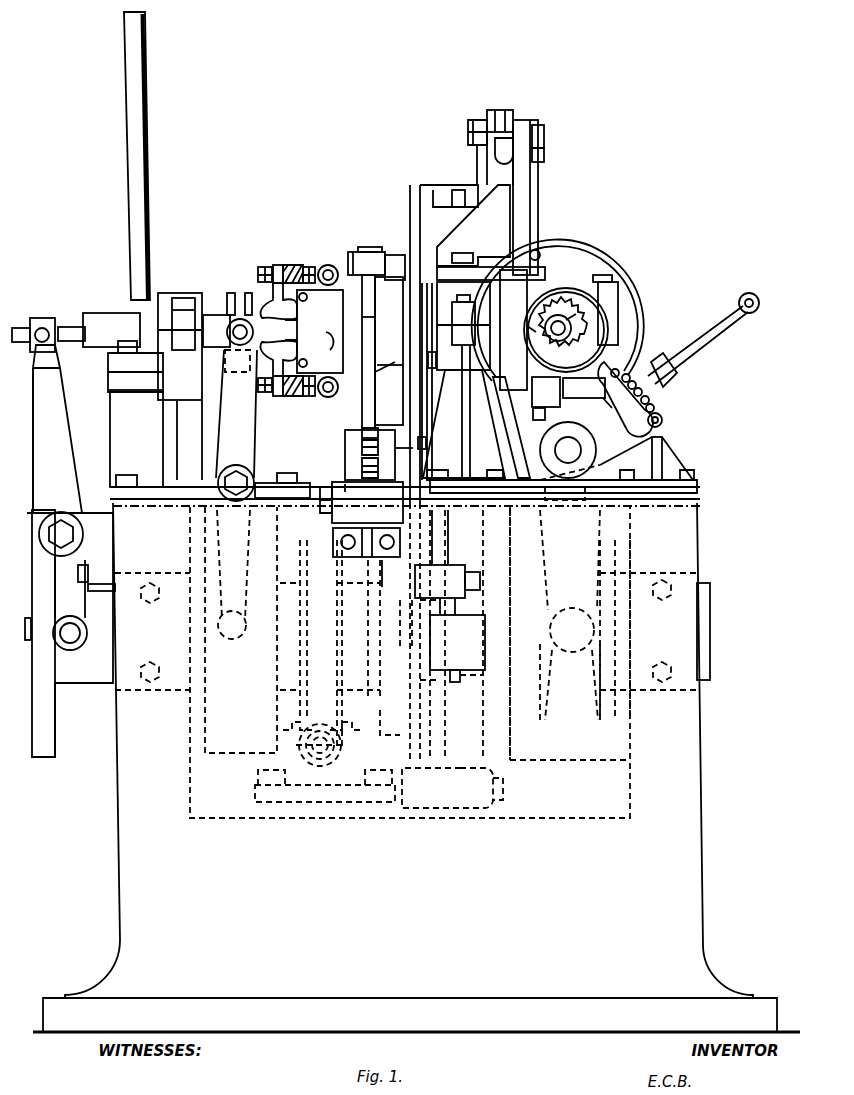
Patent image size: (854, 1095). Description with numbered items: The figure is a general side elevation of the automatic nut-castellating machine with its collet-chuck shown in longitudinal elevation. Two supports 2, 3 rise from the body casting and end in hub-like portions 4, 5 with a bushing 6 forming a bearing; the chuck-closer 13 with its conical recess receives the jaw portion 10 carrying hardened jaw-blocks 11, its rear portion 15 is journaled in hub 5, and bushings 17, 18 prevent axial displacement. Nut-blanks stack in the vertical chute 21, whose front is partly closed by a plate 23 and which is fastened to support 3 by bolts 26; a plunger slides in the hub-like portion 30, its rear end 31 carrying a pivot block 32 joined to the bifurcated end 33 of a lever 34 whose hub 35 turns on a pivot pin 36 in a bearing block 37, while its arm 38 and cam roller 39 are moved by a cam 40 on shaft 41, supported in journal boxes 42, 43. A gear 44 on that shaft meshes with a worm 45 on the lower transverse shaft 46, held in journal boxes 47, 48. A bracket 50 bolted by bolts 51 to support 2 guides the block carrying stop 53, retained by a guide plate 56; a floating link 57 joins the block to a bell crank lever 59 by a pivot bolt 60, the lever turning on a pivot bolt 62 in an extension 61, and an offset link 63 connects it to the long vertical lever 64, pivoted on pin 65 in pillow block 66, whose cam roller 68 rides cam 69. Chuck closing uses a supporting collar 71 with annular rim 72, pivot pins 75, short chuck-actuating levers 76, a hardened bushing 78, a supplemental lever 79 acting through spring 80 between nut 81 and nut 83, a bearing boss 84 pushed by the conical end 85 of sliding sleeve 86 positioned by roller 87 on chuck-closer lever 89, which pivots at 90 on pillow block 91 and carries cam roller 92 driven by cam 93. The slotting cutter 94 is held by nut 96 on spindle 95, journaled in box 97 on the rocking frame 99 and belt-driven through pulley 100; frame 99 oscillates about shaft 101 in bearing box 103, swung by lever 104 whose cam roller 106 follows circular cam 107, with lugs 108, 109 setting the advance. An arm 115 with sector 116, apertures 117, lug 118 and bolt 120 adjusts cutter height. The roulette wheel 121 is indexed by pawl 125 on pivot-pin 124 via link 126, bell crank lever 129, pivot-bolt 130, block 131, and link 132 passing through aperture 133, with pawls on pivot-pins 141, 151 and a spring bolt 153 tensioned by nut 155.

The support 2 is at (464, 424).
The support 3 is at (136, 438).
The hub-like portion 4 is at (463, 380).
The hub-like portion 5 is at (180, 377).
The bushing 6 is at (432, 381).
The jaw portion 10 is at (546, 393).
The jaw-blocks 11 is at (530, 329).
The chuck-closer 13 is at (513, 330).
The rear portion of chuck-closer 15 is at (216, 331).
The bushing 17 is at (509, 427).
The bushing 18 is at (436, 358).
The vertical chute 21 is at (127, 180).
The plate 23 is at (150, 205).
The bolts 26 is at (135, 359).
The hub-like portion 30 is at (112, 318).
The rear end of plunger 31 is at (70, 327).
The pivot block 32 is at (40, 320).
The bifurcated end 33 is at (55, 361).
The lever 34 is at (50, 440).
The hub 35 is at (61, 532).
The pivot pin 36 is at (83, 578).
The bearing block 37 is at (95, 522).
The arm 38 is at (70, 622).
The cam roller 39 is at (74, 645).
The cam 40 is at (52, 720).
The shaft 41 is at (16, 629).
The journal box 42 is at (150, 580).
The journal box 43 is at (675, 573).
The gear 44 is at (333, 540).
The worm 45 is at (320, 724).
The lower transverse shaft 46 is at (320, 745).
The journal box 47 is at (325, 786).
The journal box 48 is at (388, 723).
The bracket 50 is at (491, 232).
The bolts 51 is at (465, 253).
The stop 53 is at (538, 231).
The guide plate 56 is at (539, 258).
The floating link 57 is at (495, 158).
The bell crank lever 59 is at (495, 110).
The pivot bolt 60 is at (479, 121).
The extension 61 is at (533, 152).
The pivot bolt 62 is at (540, 127).
The offset link 63 is at (447, 192).
The long vertical lever 64 is at (418, 224).
The pivot pin 65 is at (499, 784).
The pillow block 66 is at (447, 788).
The cam roller 68 is at (415, 580).
The cam 69 is at (405, 619).
The supporting collar 71 is at (327, 334).
The annular rim 72 is at (318, 331).
The pivot pin 75 is at (308, 298).
The short chuck-actuating lever 76 is at (328, 265).
The hardened bushing 78 is at (287, 330).
The supplemental actuating lever 79 is at (280, 265).
The spring 80 is at (295, 265).
The nut 81 is at (310, 267).
The nut 83 is at (253, 329).
The bearing boss 84 is at (254, 330).
The conical end 85 is at (254, 340).
The sliding sleeve 86 is at (232, 295).
The roller 87 is at (225, 353).
The chuck-closer lever 89 is at (227, 387).
The pivot 90 is at (236, 473).
The pillow block 91 is at (292, 474).
The cam roller 92 is at (247, 621).
The cam 93 is at (241, 631).
The slotting cutter 94 is at (559, 307).
The spindle 95 is at (573, 322).
The nut 96 is at (566, 333).
The box 97 is at (605, 310).
The rocking frame 99 is at (584, 387).
The pulley 100 is at (640, 305).
The shaft 101 is at (590, 444).
The bearing box 103 is at (618, 472).
The lever 104 is at (597, 595).
The cam roller 106 is at (571, 685).
The circular cam 107 is at (561, 633).
The lug 108 is at (533, 414).
The lug 109 is at (605, 400).
The arm 115 is at (565, 500).
The sector 116 is at (658, 399).
The apertures 117 is at (637, 362).
The lug 118 is at (673, 377).
The bolt 120 is at (662, 420).
The roulette wheel 121 is at (394, 351).
The pivot-pin 124 is at (352, 250).
The pawl 125 is at (376, 320).
The link 126 is at (390, 255).
The bell crank lever 129 is at (416, 402).
The pivot-bolt 130 is at (332, 500).
The block 131 is at (350, 494).
The link 132 is at (466, 685).
The aperture 133 is at (485, 645).
The pivot-pin 141 is at (352, 455).
The pivot-pin 151 is at (355, 464).
The bolt 153 is at (360, 425).
The nut 155 is at (399, 470).